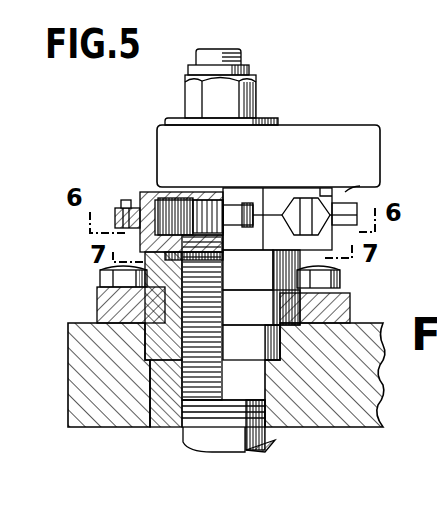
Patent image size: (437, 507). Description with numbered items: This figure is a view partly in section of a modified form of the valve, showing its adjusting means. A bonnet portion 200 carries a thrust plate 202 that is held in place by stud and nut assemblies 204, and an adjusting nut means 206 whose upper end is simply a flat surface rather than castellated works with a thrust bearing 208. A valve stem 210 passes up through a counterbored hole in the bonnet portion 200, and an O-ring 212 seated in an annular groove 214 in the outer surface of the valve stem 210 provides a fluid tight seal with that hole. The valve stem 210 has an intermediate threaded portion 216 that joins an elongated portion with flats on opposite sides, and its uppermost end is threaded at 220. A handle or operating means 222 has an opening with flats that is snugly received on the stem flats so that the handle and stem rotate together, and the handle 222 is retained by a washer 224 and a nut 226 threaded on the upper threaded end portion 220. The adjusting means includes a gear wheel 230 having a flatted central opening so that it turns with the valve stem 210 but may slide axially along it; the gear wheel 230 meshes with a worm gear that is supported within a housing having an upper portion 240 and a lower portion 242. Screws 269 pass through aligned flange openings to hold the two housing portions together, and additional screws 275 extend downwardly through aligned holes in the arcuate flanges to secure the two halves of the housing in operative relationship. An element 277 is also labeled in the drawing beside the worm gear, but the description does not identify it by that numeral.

The bonnet portion 200 is at (364, 386).
The thrust plate 202 is at (352, 303).
The stud and nut assemblies 204 is at (102, 276).
The adjusting nut means 206 is at (143, 355).
The thrust bearing 208 is at (110, 310).
The valve stem 210 is at (183, 442).
The O-ring 212 is at (284, 406).
The annular groove 214 is at (232, 406).
The intermediate threaded portion 216 is at (176, 362).
The threaded upper end portion 220 is at (240, 60).
The handle or operating means 222 is at (340, 125).
The washer 224 is at (262, 112).
The nut 226 is at (252, 84).
The gear wheel 230 is at (236, 190).
The upper housing portion 240 is at (150, 194).
The lower housing portion 242 is at (260, 284).
The screws 269 is at (374, 186).
The screws 275 is at (125, 200).
The pin 277 is at (202, 215).